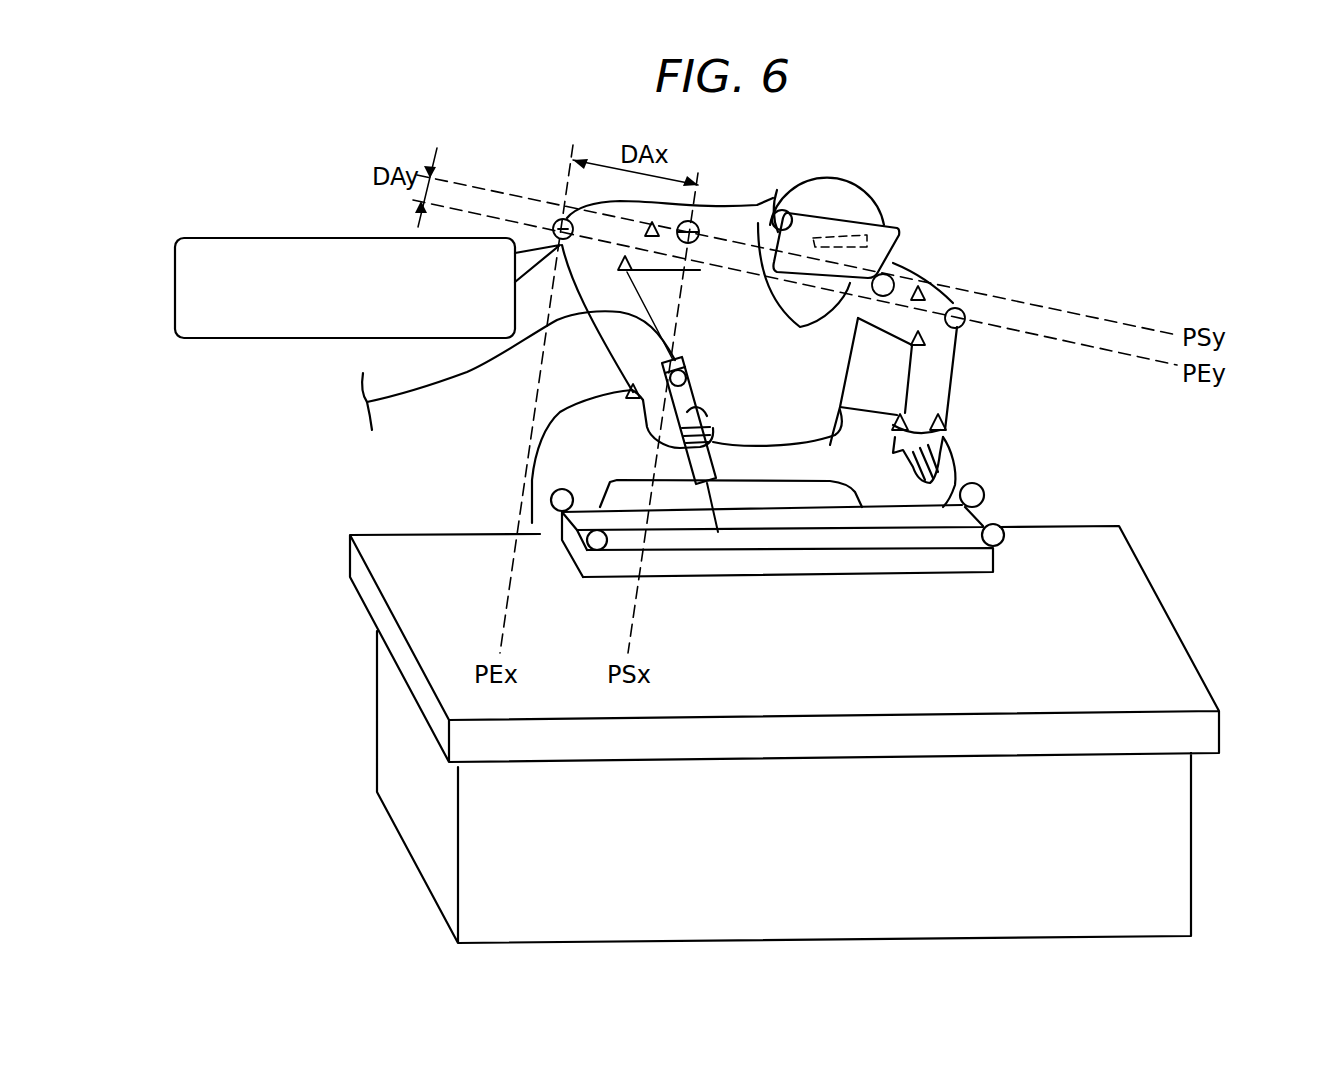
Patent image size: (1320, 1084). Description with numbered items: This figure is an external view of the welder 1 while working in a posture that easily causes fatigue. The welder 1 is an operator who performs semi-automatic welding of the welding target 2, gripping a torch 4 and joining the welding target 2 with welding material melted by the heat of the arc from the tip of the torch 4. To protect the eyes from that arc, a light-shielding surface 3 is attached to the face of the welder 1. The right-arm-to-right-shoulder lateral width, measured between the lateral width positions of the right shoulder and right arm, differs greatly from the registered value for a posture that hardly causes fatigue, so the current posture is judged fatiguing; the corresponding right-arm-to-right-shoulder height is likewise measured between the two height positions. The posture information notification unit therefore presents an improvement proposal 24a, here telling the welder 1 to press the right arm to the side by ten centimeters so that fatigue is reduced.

The welder 1 is at (1050, 285).
The welding target 2 is at (993, 563).
The light-shielding surface 3 is at (894, 232).
The torch 4 is at (685, 465).
The improvement proposal 24a is at (217, 340).